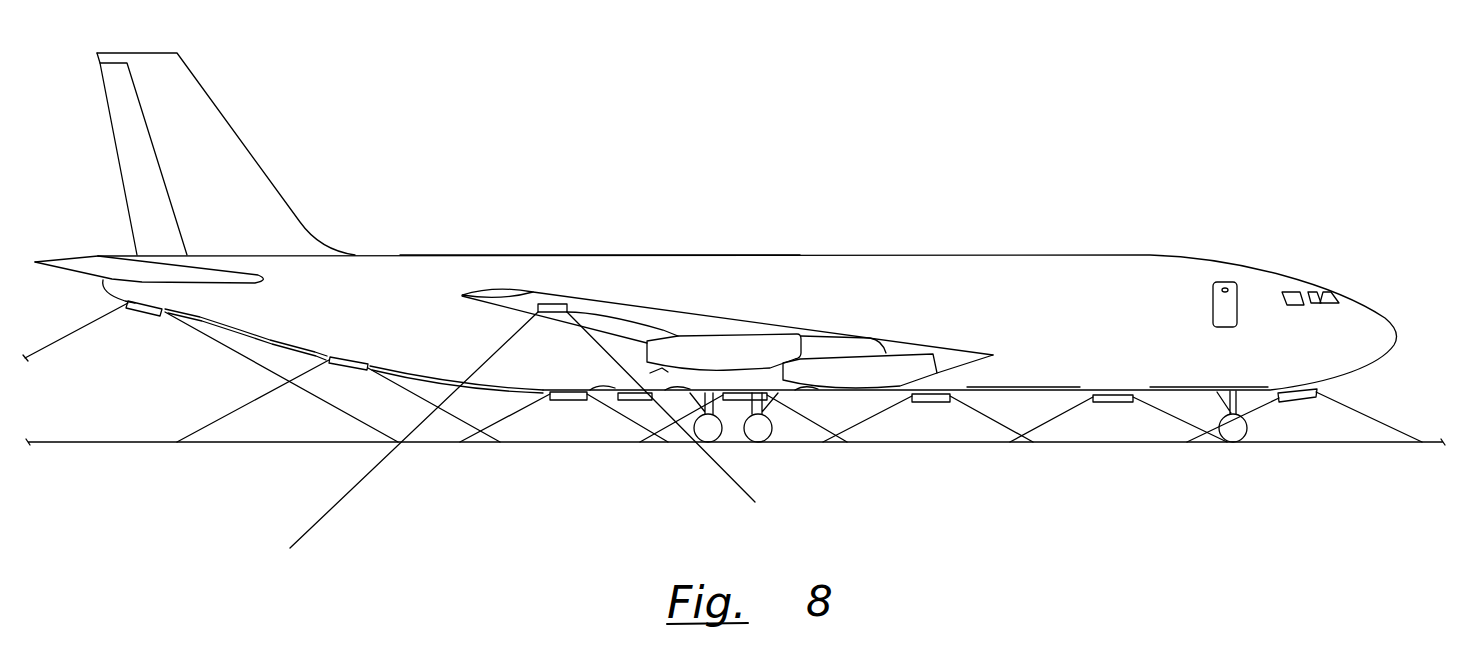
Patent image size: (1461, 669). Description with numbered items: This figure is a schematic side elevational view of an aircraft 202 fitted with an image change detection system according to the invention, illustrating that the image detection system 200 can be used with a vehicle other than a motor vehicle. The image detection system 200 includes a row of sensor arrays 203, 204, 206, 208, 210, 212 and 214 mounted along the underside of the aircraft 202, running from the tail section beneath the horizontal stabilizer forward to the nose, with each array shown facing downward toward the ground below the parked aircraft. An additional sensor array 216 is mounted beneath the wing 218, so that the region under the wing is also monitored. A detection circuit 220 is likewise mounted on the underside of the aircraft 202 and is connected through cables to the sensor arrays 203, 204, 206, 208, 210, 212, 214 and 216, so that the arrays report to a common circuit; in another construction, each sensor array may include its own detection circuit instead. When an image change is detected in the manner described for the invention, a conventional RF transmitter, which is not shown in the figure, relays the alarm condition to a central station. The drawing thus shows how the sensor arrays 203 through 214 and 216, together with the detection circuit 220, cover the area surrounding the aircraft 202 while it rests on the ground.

The image detection system 200 is at (1157, 373).
The aircraft 202 is at (578, 255).
The sensor array 203 is at (140, 312).
The sensor array 204 is at (345, 366).
The sensor array 206 is at (578, 400).
The sensor array 208 is at (770, 397).
The sensor array 210 is at (929, 397).
The sensor array 212 is at (1115, 398).
The sensor array 214 is at (1297, 397).
The sensor array 216 is at (555, 304).
The wing 218 is at (690, 312).
The detection circuit 220 is at (627, 393).